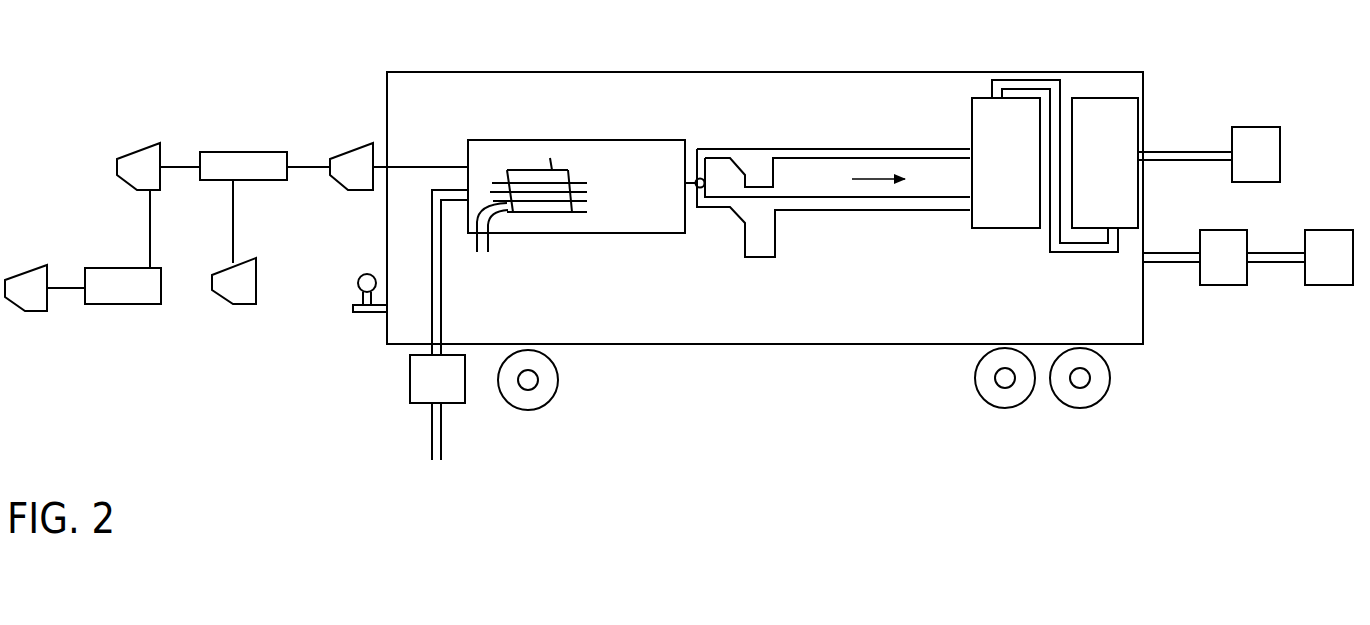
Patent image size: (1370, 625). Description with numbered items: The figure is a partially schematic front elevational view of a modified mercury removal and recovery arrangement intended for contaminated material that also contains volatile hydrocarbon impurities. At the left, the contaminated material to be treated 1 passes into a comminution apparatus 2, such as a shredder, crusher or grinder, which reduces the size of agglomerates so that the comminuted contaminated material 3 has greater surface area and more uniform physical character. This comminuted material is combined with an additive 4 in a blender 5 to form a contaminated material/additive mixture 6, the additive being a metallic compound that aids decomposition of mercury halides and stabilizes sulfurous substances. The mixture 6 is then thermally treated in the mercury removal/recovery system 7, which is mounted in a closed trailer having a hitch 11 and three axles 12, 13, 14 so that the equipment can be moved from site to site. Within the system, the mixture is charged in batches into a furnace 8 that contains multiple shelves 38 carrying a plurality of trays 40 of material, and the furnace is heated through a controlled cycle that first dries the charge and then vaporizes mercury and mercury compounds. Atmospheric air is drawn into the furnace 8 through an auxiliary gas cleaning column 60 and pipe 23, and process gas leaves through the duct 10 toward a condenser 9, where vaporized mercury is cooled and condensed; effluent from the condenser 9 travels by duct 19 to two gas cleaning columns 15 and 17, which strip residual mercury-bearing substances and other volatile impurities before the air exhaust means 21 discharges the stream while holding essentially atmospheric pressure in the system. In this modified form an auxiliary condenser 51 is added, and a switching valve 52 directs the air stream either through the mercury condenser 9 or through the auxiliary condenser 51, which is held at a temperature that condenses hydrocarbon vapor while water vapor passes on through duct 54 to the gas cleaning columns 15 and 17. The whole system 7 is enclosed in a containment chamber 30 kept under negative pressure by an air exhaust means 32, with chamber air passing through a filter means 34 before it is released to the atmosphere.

The contaminated material to be treated 1 is at (22, 282).
The comminution apparatus 2 is at (120, 270).
The comminuted contaminated material 3 is at (137, 157).
The additive 4 is at (212, 287).
The blender 5 is at (248, 157).
The contaminated material/additive mixture 6 is at (355, 153).
The mercury removal/recovery system 7 is at (543, 121).
The furnace 8 is at (667, 135).
The condenser 9 is at (761, 259).
The duct 10 is at (720, 203).
The hitch 11 is at (355, 308).
The axle 12 is at (518, 387).
The axle 13 is at (1010, 383).
The axle 14 is at (1085, 383).
The gas cleaning column 15 is at (985, 102).
The gas cleaning column 17 is at (1103, 105).
The duct 19 is at (823, 207).
The air exhaust means 21 is at (1253, 130).
The pipe 23 is at (433, 278).
The containment chamber 30 is at (796, 347).
The air exhaust means 32 is at (1337, 277).
The filter means 34 is at (1227, 277).
The shelves 38 is at (495, 170).
The trays 40 is at (505, 176).
The auxiliary condenser 51 is at (769, 142).
The switching valve 52 is at (698, 175).
The duct 54 is at (883, 153).
The auxiliary gas cleaning column 60 is at (420, 378).